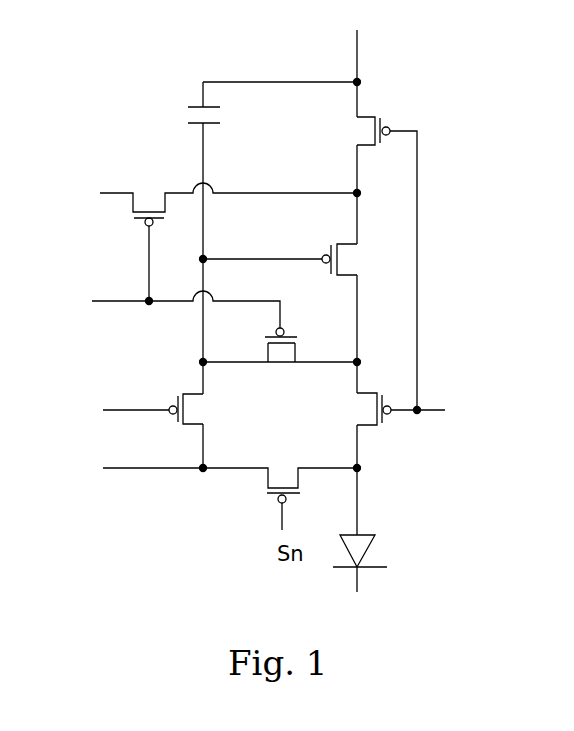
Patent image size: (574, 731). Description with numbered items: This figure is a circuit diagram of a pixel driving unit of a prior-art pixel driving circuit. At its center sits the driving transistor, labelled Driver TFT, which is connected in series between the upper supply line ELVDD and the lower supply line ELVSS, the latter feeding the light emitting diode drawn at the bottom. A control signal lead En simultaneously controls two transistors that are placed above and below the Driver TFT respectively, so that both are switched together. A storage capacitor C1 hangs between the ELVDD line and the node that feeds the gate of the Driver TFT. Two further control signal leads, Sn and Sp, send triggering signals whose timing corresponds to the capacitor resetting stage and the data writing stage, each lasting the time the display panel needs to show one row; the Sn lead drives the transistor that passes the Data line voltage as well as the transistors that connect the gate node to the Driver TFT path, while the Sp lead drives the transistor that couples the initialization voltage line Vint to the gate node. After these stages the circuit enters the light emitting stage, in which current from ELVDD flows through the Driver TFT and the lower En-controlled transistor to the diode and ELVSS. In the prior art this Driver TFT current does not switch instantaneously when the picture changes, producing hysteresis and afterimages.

The first power supply voltage line ELVDD is at (363, 62).
The second power supply voltage line with organic light emitting diode ELVSS is at (362, 531).
The storage capacitor C1 is at (224, 137).
The driving transistor Driver TFT is at (333, 260).
The data line and data switching transistor Data is at (195, 242).
The control signal lead Sn is at (173, 326).
The control signal lead Sp is at (125, 408).
The initialization voltage line Vint is at (204, 494).
The control signal lead En is at (421, 410).